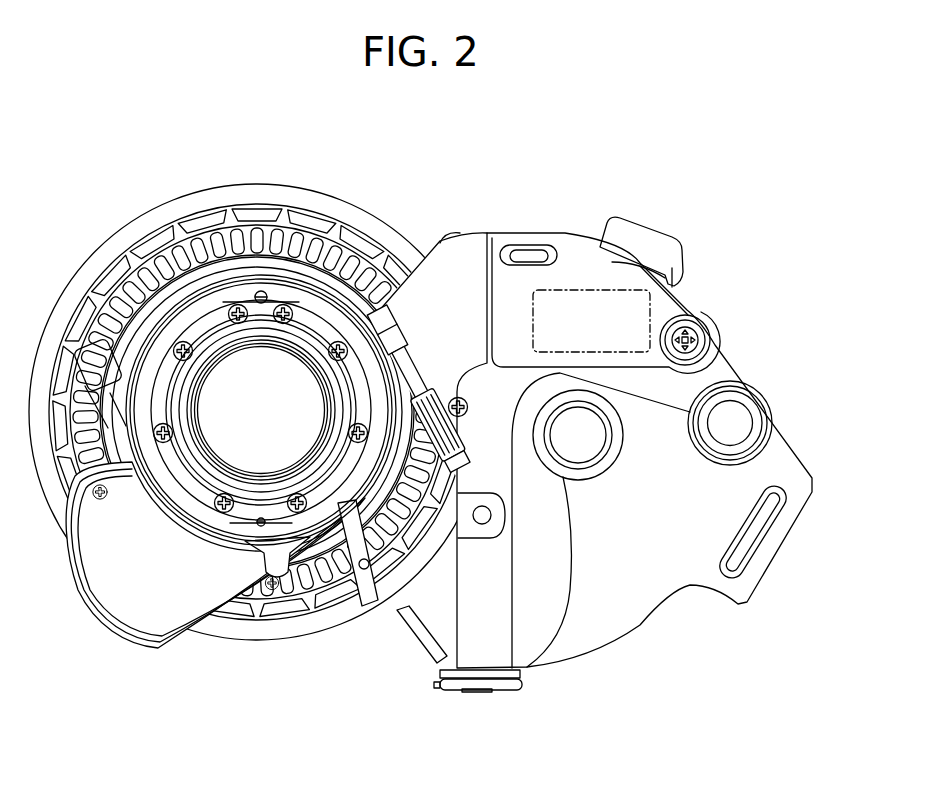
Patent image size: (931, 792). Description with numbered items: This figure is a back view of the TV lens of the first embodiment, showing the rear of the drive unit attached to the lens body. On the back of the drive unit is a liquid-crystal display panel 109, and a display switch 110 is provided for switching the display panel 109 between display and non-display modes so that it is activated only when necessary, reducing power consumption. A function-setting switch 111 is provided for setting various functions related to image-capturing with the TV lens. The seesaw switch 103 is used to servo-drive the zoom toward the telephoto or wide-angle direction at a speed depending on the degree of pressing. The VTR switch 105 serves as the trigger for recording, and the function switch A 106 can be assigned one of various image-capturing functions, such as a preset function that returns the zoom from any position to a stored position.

The seesaw switch 103 is at (646, 232).
The VTR switch 105 is at (596, 452).
The function switch A 106 is at (745, 412).
The liquid-crystal display panel 109 is at (582, 262).
The display switch 110 is at (523, 248).
The function-setting switch 111 is at (694, 336).